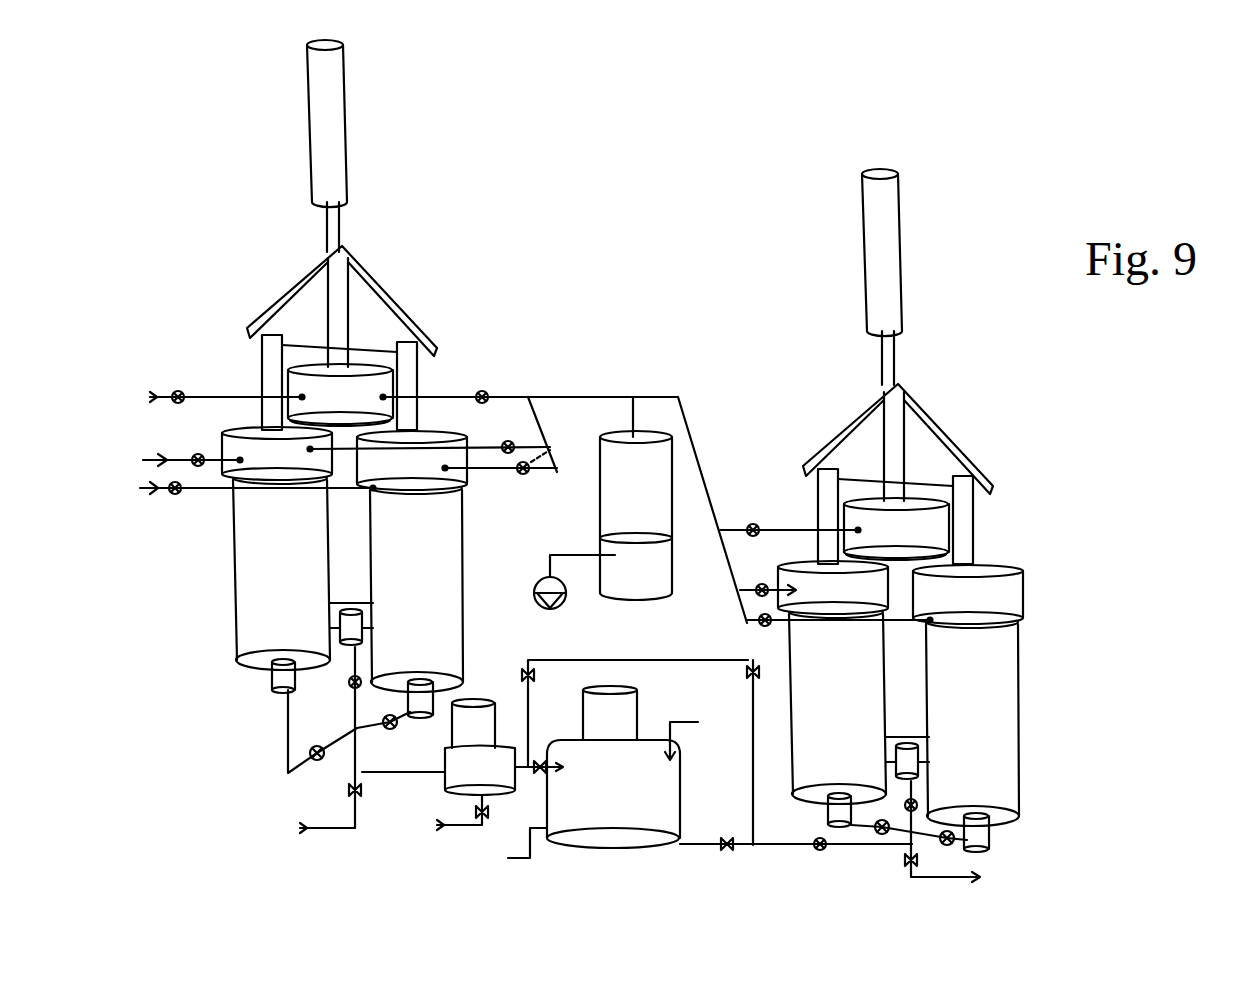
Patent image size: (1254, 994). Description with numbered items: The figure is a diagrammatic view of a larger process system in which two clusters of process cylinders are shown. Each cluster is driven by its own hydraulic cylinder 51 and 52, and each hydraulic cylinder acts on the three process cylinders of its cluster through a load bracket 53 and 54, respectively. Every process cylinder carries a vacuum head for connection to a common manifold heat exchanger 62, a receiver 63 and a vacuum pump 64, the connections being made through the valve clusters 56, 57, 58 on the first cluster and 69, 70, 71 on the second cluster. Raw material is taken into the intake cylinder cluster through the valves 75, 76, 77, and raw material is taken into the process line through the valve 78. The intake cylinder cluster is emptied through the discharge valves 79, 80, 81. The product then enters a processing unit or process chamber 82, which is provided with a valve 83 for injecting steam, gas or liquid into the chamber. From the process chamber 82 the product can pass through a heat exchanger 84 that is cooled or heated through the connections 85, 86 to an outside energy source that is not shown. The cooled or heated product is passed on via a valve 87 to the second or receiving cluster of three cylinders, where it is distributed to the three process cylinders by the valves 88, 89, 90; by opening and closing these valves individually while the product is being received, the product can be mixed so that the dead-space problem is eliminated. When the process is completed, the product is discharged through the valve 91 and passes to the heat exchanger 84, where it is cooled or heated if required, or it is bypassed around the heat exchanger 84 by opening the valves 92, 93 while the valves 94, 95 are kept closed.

The hydraulic cylinder 51 is at (333, 115).
The hydraulic cylinder 52 is at (918, 277).
The load bracket 53 is at (367, 303).
The load bracket 54 is at (903, 432).
The valve 56 is at (480, 390).
The valve 57 is at (508, 440).
The valve 58 is at (553, 445).
The manifold heat exchanger 62 is at (653, 480).
The receiver 63 is at (640, 570).
The vacuum pump 64 is at (535, 595).
The valve 69 is at (750, 524).
The valve 70 is at (767, 582).
The valve 71 is at (765, 627).
The valve 75 is at (175, 391).
The valve 76 is at (184, 457).
The valve 77 is at (177, 495).
The valve 78 is at (362, 792).
The discharge valve 79 is at (320, 760).
The discharge valve 80 is at (350, 680).
The discharge valve 81 is at (392, 730).
The process chamber 82 is at (462, 794).
The valve 83 is at (498, 815).
The heat exchanger 84 is at (610, 842).
The connection 85 is at (515, 862).
The connection 86 is at (687, 725).
The valve 87 is at (820, 851).
The valve 88 is at (950, 845).
The valve 89 is at (915, 798).
The valve 90 is at (884, 820).
The valve 91 is at (906, 860).
The valve 92 is at (524, 674).
The valve 93 is at (745, 668).
The valve 94 is at (727, 850).
The valve 95 is at (545, 773).